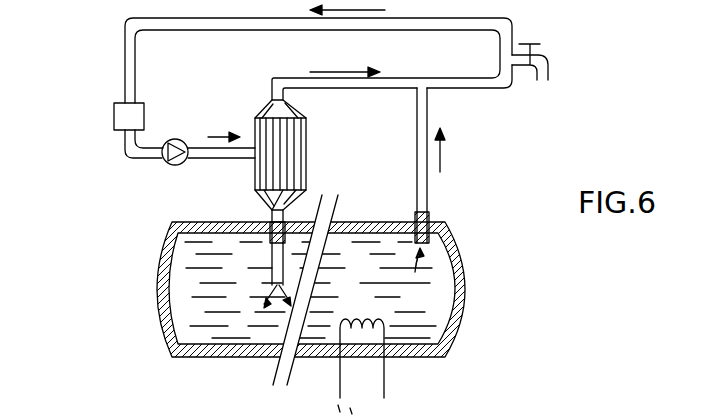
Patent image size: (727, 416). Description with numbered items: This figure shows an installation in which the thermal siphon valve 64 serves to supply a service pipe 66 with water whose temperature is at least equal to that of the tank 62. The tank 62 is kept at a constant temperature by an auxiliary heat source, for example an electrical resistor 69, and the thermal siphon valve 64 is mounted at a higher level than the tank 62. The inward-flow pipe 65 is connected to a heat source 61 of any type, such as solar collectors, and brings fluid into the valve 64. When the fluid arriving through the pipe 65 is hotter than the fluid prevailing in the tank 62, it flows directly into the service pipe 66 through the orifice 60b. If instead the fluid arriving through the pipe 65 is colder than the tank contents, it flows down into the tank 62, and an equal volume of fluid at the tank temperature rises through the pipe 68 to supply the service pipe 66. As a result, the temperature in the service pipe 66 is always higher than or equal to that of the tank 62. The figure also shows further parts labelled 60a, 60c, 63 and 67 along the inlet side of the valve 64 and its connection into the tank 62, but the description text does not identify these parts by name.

The inlet pipe to separator 60a is at (243, 160).
The orifice 60b is at (276, 88).
The liquid outlet of separator 60c is at (292, 188).
The heat source 61 is at (114, 113).
The tank 62 is at (462, 262).
The pump 63 is at (175, 165).
The thermal siphon valve 64 is at (306, 140).
The inward-flow pipe 65 is at (140, 160).
The service pipe 66 is at (125, 47).
The discharge pipe 67 is at (272, 212).
The pipe 68 is at (425, 192).
The electrical resistor 69 is at (450, 325).